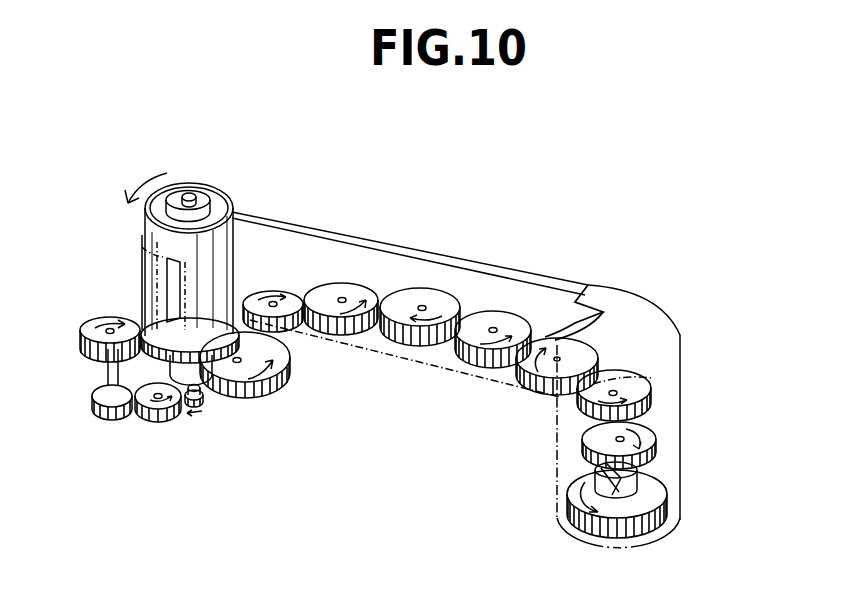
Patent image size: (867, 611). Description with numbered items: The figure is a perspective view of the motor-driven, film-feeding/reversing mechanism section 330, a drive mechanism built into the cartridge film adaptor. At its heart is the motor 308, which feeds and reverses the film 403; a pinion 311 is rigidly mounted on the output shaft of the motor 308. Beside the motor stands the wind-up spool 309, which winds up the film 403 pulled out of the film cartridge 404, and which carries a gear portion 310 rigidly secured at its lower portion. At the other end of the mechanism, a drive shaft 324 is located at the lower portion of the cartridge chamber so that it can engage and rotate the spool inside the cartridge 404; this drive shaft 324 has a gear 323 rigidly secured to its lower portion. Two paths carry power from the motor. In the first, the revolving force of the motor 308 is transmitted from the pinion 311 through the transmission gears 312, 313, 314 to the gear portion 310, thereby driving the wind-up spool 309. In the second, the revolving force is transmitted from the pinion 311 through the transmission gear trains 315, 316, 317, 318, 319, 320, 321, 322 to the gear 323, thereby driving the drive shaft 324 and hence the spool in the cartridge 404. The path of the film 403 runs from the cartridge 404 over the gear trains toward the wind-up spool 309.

The motor 308 is at (191, 197).
The wind-up spool 309 is at (233, 210).
The gear portion 310 is at (145, 306).
The pinion 311 is at (205, 404).
The transmission gear 312 is at (165, 420).
The transmission gear 313 is at (110, 422).
The transmission gear 314 is at (90, 318).
The transmission gear train 315 is at (284, 390).
The transmission gear train 316 is at (283, 291).
The transmission gear train 317 is at (367, 285).
The transmission gear train 318 is at (433, 298).
The transmission gear train 319 is at (507, 320).
The transmission gear train 320 is at (583, 357).
The transmission gear train 321 is at (652, 386).
The transmission gear train 322 is at (658, 440).
The gear 323 is at (665, 504).
The drive shaft 324 is at (628, 486).
The motor-driven, film-feeding/reversing mechanism section 330 is at (437, 366).
The film 403 is at (383, 247).
The film cartridge 404 is at (680, 333).